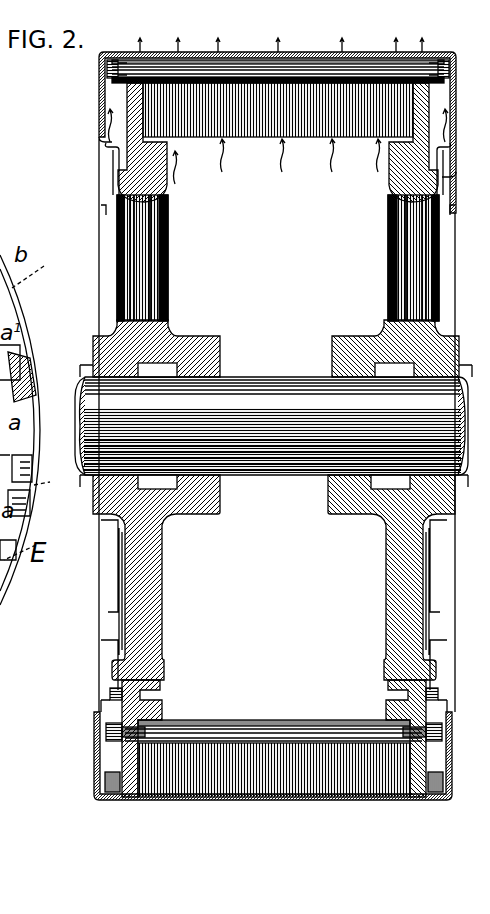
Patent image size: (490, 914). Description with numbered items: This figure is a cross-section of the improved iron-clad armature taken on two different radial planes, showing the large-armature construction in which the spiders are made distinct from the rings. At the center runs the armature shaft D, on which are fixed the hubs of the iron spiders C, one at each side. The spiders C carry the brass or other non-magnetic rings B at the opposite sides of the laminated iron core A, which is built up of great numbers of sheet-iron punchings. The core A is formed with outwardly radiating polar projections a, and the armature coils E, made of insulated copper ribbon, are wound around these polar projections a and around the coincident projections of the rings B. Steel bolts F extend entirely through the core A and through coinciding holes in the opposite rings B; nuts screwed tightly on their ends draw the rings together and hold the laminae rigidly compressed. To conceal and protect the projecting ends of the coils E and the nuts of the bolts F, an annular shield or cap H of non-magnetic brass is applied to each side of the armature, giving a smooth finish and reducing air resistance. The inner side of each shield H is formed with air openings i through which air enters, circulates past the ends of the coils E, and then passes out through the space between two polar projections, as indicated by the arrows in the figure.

The annular shield or cap H is at (100, 112).
The laminated iron core A is at (201, 150).
The non-magnetic ring B is at (125, 172).
The spider C is at (168, 243).
The armature shaft D is at (292, 466).
The air opening i is at (112, 195).
The bolt F is at (287, 740).
The polar projection a is at (200, 790).
The armature coil E is at (428, 795).